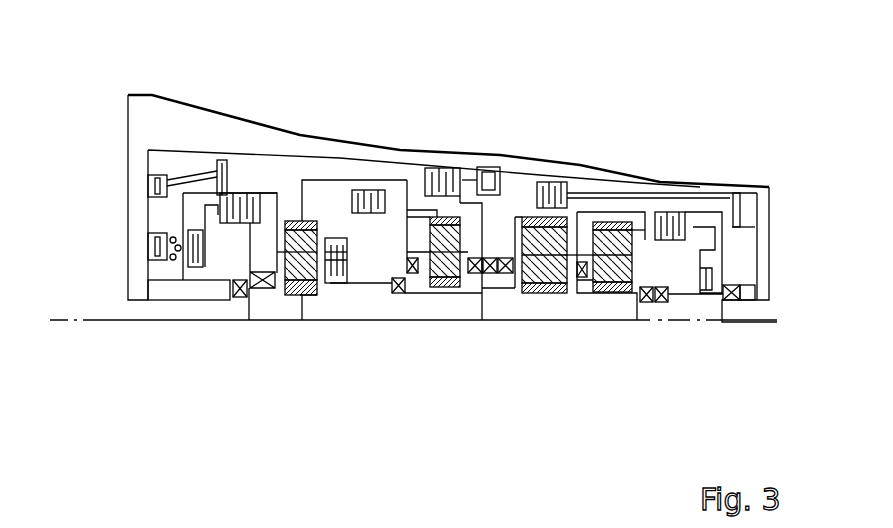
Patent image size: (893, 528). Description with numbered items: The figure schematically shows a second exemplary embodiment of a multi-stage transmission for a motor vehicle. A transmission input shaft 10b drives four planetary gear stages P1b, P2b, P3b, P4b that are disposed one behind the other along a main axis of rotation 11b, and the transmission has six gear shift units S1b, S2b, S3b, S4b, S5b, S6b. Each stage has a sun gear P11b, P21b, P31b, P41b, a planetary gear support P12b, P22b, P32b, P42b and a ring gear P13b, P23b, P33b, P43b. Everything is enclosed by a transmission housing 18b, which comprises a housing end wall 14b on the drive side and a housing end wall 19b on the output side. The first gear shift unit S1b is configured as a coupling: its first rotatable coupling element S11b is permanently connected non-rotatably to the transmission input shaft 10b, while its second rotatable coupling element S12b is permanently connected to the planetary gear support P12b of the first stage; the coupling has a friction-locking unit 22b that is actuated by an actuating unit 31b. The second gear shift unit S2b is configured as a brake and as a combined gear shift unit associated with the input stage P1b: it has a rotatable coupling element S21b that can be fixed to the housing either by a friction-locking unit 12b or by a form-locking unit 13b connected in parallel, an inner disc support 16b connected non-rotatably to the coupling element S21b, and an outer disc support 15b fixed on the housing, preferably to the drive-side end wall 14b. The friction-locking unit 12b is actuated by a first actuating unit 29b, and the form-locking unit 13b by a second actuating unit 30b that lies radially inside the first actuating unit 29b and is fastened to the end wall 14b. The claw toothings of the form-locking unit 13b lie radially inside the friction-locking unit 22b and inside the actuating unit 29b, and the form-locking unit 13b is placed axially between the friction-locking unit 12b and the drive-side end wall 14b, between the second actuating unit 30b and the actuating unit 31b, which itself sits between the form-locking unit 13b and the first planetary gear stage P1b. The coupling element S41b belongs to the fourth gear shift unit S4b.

The housing end wall on the drive side 14b is at (132, 88).
The outer disc support 15b is at (217, 155).
The friction-locking unit 12b is at (200, 155).
The rotatable coupling element S21b is at (256, 178).
The second rotatable coupling element S12b is at (279, 189).
The first gear shift unit S1b is at (300, 178).
The transmission housing 18b is at (432, 214).
The ring gear of the first planetary gear stage P13b is at (346, 178).
The ring gear of the second planetary gear stage P23b is at (420, 180).
The friction-locking unit of the first gear shift unit 22b is at (388, 150).
The coupling element of the fourth gear shift unit S41b is at (480, 165).
The fourth gear shift unit S4b is at (507, 178).
The fifth gear shift unit S5b is at (532, 190).
The ring gear of the third planetary gear stage P33b is at (578, 212).
The ring gear of the fourth planetary gear stage P43b is at (603, 222).
The housing end wall on the output side 19b is at (762, 180).
The first actuating unit 29b is at (140, 187).
The inner disc support 16b is at (195, 186).
The form-locking unit 13b is at (177, 232).
The second actuating unit 30b is at (140, 248).
The main axis of rotation 11b is at (70, 322).
The second gear shift unit S2b is at (158, 287).
The transmission input shaft 10b is at (207, 265).
The actuating unit of the first gear shift unit 31b is at (184, 276).
The first rotatable coupling element S11b is at (248, 238).
The planetary gear support of the first planetary gear stage P12b is at (283, 258).
The third gear shift unit S3b is at (341, 290).
The sun gear of the first planetary gear stage P11b is at (313, 296).
The first planetary gear stage P1b is at (302, 334).
The planetary gear support of the second planetary gear stage P22b is at (407, 294).
The sun gear of the second planetary gear stage P21b is at (437, 288).
The second planetary gear stage P2b is at (443, 311).
The planetary gear support of the third planetary gear stage P32b is at (516, 285).
The sun gear of the third planetary gear stage P31b is at (531, 293).
The third planetary gear stage P3b is at (543, 311).
The planetary gear support of the fourth planetary gear stage P42b is at (588, 283).
The sun gear of the fourth planetary gear stage P41b is at (630, 293).
The fourth planetary gear stage P4b is at (613, 311).
The sixth gear shift unit S6b is at (707, 303).